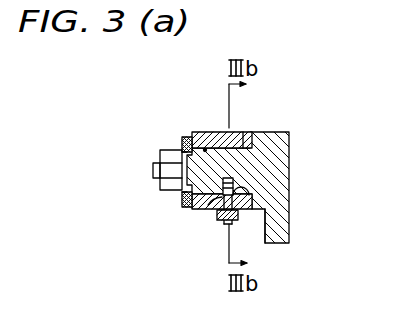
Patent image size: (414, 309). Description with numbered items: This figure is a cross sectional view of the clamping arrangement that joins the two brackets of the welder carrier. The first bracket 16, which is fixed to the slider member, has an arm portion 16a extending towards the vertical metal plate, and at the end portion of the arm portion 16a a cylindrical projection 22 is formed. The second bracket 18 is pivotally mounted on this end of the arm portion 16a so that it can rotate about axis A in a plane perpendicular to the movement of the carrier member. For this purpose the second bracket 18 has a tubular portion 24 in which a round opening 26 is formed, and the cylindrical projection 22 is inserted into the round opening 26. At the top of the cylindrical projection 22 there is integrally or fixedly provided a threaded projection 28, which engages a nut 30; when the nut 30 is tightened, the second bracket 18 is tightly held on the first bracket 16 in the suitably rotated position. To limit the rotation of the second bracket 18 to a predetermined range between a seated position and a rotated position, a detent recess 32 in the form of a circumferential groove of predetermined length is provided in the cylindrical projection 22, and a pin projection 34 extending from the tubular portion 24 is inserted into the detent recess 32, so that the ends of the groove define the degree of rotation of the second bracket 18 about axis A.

The first bracket 16 is at (282, 132).
The arm portion 16a is at (278, 226).
The second bracket 18 is at (192, 210).
The cylindrical projection 22 is at (243, 132).
The tubular portion 24 is at (218, 132).
The round opening 26 is at (194, 133).
The threaded projection 28 is at (156, 172).
The nut 30 is at (178, 194).
The detent recess 32 is at (243, 214).
The pin projection 34 is at (216, 214).